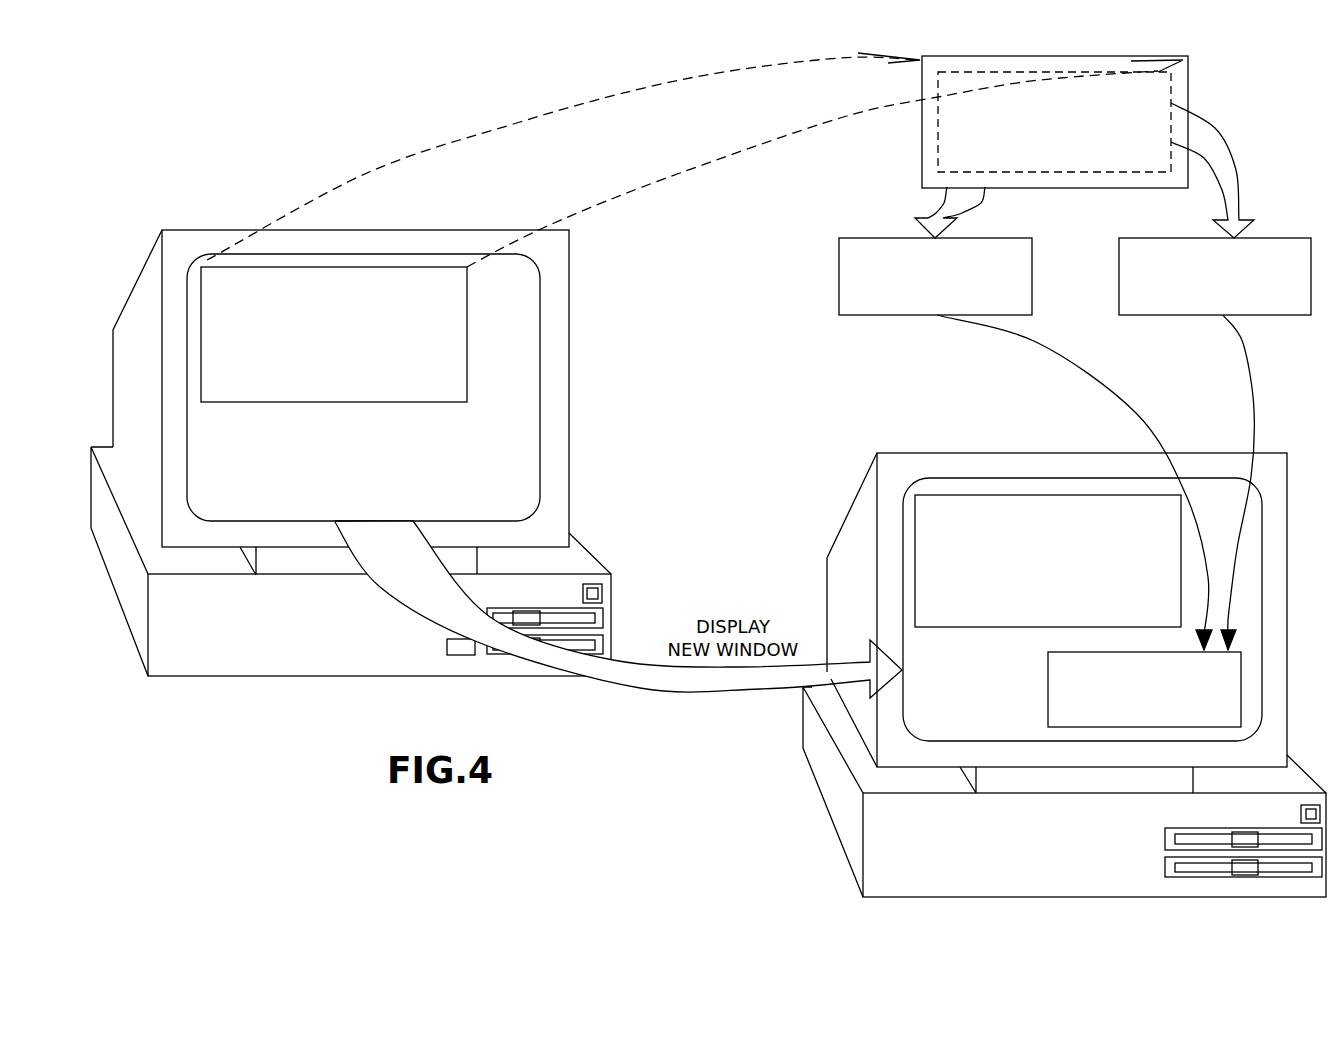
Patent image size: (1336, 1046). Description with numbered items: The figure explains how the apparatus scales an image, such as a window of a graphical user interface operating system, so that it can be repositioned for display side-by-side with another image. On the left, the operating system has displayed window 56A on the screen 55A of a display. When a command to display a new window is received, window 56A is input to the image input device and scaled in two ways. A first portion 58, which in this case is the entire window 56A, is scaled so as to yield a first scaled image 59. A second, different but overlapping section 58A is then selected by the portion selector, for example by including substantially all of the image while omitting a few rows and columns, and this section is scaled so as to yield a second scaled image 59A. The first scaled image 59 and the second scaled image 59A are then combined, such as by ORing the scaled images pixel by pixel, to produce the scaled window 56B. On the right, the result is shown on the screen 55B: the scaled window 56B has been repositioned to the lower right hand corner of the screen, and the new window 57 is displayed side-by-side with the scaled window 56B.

The screen 55A is at (213, 257).
The window 56A is at (408, 403).
The screen 55B is at (902, 565).
The new window 57 is at (930, 628).
The scaled window 56B is at (1048, 702).
The first portion 58 is at (1188, 82).
The second section 58A is at (940, 140).
The first scaled image 59 is at (873, 238).
The second scaled image 59A is at (1168, 238).